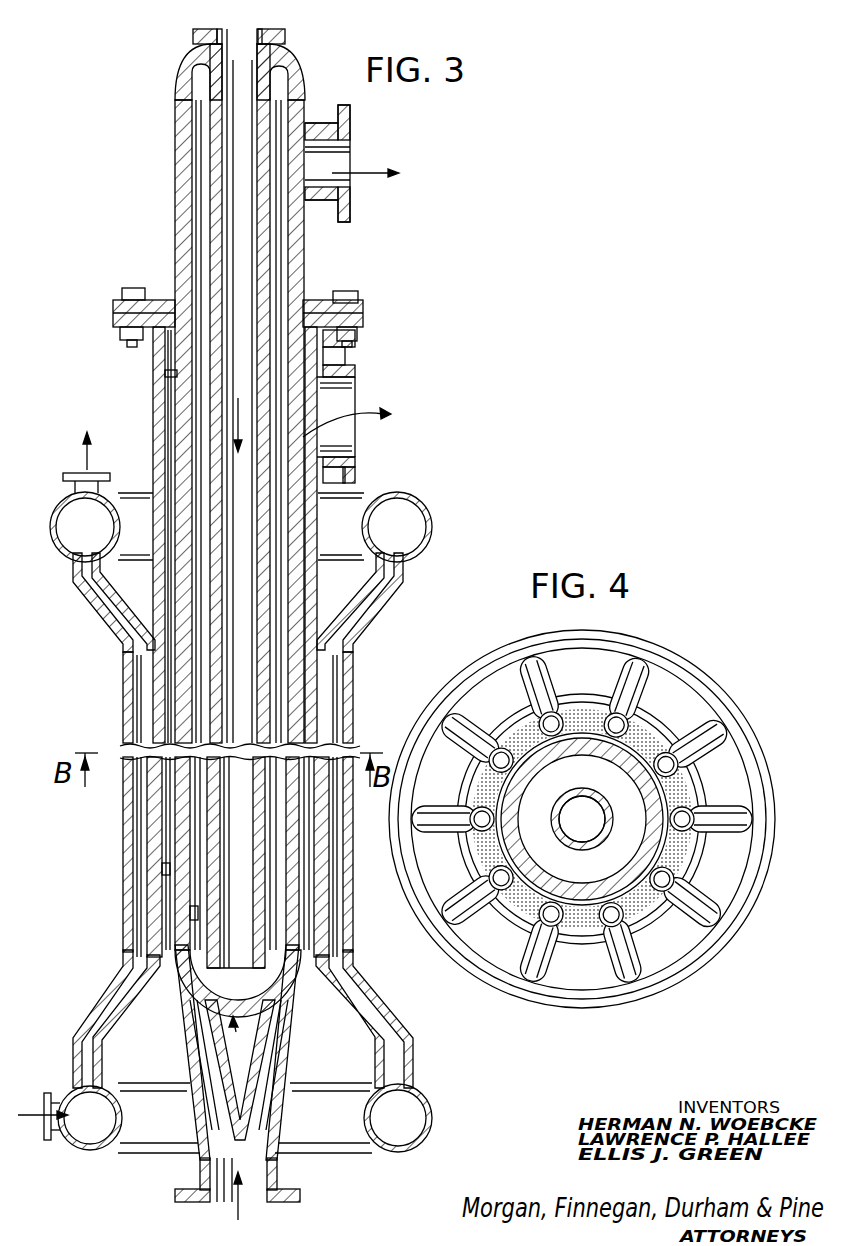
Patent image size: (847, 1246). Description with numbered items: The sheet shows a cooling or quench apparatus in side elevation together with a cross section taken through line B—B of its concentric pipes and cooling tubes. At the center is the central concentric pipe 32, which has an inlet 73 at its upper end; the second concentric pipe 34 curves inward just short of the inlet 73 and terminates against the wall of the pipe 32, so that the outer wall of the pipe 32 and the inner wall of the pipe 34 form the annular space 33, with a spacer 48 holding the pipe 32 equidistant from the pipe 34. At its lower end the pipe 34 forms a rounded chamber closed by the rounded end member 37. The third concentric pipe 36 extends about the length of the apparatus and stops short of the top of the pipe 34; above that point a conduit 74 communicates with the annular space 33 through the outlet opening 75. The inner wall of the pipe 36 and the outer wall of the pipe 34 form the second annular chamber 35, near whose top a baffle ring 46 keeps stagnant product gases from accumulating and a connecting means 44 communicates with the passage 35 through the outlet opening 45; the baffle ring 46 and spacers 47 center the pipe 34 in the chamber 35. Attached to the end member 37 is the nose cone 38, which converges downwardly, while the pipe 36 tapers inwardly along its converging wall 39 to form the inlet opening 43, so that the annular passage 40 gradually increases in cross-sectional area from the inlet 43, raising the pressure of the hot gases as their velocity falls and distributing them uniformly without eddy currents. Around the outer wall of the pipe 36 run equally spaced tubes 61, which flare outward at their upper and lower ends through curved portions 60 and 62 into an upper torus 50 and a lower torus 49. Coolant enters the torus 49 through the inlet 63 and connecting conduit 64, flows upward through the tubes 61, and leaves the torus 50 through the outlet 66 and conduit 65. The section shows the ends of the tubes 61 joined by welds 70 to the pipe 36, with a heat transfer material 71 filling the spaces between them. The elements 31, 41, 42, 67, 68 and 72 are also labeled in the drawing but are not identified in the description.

In FIG. 3, the central feed tube 31 is at (227, 850).
In FIG. 4, the central feed tube 31 is at (590, 818).
In FIG. 3, the central concentric pipe 32 is at (208, 878).
In FIG. 4, the central concentric pipe 32 is at (598, 845).
In FIG. 3, the annular space 33 is at (275, 712).
In FIG. 4, the annular space 33 is at (553, 798).
In FIG. 3, the second concentric pipe 34 is at (180, 932).
In FIG. 4, the second concentric pipe 34 is at (527, 757).
In FIG. 3, the second annular chamber 35 is at (300, 680).
In FIG. 4, the second annular chamber 35 is at (582, 740).
In FIG. 3, the third concentric pipe 36 is at (160, 960).
In FIG. 4, the third concentric pipe 36 is at (593, 738).
In FIG. 3, the rounded end member 37 is at (239, 1065).
In FIG. 3, the nose cone 38 is at (185, 1028).
In FIG. 3, the converging wall 39 is at (190, 1054).
In FIG. 3, the annular passage 40 is at (290, 1061).
In FIG. 3, the outlet nozzle 41 is at (277, 1181).
In FIG. 3, the outlet flange 42 is at (197, 1197).
In FIG. 3, the inlet opening 43 is at (275, 1192).
In FIG. 3, the connecting means 44 is at (345, 478).
In FIG. 4, the connecting means 44 is at (695, 855).
In FIG. 3, the outlet opening 45 is at (323, 444).
In FIG. 3, the baffle ring 46 is at (317, 383).
In FIG. 3, the spacers 47 is at (162, 868).
In FIG. 3, the spacer 48 is at (198, 910).
In FIG. 3, the torus 49 is at (133, 1140).
In FIG. 3, the torus 50 is at (372, 497).
In FIG. 4, the torus 50 is at (748, 790).
In FIG. 3, the curved portions 60 is at (88, 612).
In FIG. 4, the curved portions 60 is at (653, 670).
In FIG. 3, the tubes 61 is at (125, 805).
In FIG. 4, the tubes 61 is at (468, 850).
In FIG. 3, the curved portions 62 is at (76, 1041).
In FIG. 3, the inlet 63 is at (50, 1135).
In FIG. 3, the connecting conduit 64 is at (44, 1100).
In FIG. 3, the conduit 65 is at (64, 451).
In FIG. 3, the outlet 66 is at (100, 477).
In FIG. 3, the inner shell 67 is at (138, 835).
In FIG. 4, the inner shell 67 is at (497, 887).
In FIG. 3, the side header 68 is at (78, 530).
In FIG. 4, the welds 70 is at (575, 925).
In FIG. 4, the heat transfer material 71 is at (645, 928).
In FIG. 3, the top flange 72 is at (210, 35).
In FIG. 3, the inlet 73 is at (264, 35).
In FIG. 3, the conduit 74 is at (310, 124).
In FIG. 3, the outlet opening 75 is at (350, 155).